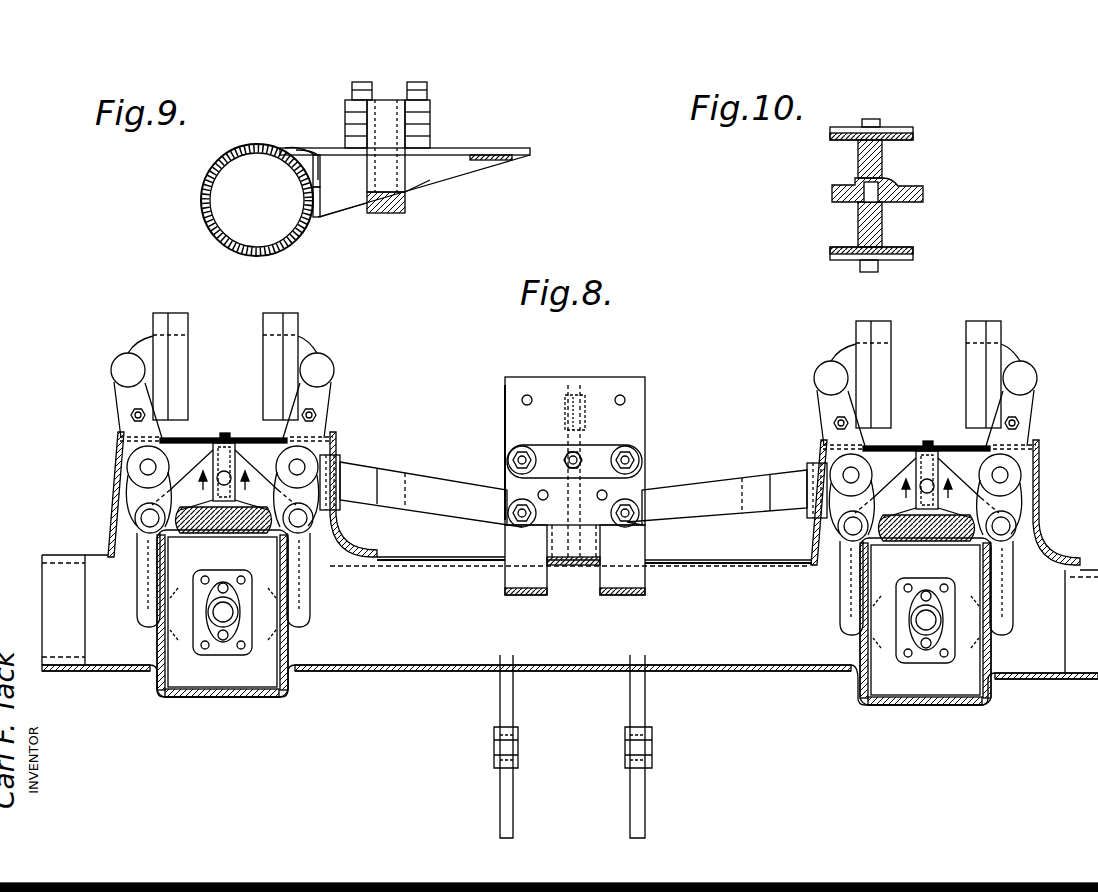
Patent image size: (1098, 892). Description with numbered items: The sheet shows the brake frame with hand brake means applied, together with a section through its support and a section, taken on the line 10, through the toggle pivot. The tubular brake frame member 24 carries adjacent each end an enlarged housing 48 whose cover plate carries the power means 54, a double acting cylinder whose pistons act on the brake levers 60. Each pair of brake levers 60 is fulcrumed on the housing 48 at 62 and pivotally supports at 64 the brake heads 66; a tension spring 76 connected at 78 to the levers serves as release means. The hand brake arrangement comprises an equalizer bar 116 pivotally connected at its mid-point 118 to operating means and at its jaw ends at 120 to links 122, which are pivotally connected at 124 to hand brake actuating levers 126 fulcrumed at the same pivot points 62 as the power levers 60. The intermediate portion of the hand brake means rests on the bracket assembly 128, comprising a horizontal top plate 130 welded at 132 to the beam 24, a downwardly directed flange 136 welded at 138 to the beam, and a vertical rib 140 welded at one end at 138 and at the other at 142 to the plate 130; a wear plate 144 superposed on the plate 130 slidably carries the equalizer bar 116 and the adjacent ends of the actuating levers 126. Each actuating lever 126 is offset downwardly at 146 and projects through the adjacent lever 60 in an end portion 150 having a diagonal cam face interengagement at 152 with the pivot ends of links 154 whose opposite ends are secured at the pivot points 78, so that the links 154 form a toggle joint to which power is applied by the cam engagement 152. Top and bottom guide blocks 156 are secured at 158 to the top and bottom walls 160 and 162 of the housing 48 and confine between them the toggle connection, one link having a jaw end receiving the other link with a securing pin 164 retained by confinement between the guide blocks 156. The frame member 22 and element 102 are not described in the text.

In FIG. 8, the direction arrows 10 is at (576, 491).
In FIG. 8, the frame tube 22 is at (398, 676).
In FIG. 9, the tubular brake frame member 24 is at (205, 190).
In FIG. 8, the tubular brake frame member 24 is at (412, 565).
In FIG. 8, the housing 48 is at (290, 690).
In FIG. 8, the power means 54 is at (200, 688).
In FIG. 8, the brake lever 60 is at (140, 550).
In FIG. 8, the fulcrum 62 is at (146, 467).
In FIG. 8, the pivot 64 is at (127, 370).
In FIG. 8, the brake head 66 is at (160, 330).
In FIG. 8, the tension spring 76 is at (222, 535).
In FIG. 8, the connection 78 is at (152, 518).
In FIG. 8, the bolt 102 is at (573, 383).
In FIG. 9, the equalizer bar 116 is at (428, 113).
In FIG. 8, the equalizer bar 116 is at (583, 455).
In FIG. 8, the pivotal connection 118 is at (578, 452).
In FIG. 9, the pivotal connection 120 is at (425, 98).
In FIG. 8, the pivotal connection 120 is at (522, 446).
In FIG. 9, the link 122 is at (430, 120).
In FIG. 8, the link 122 is at (510, 475).
In FIG. 9, the pivotal connection 124 is at (358, 95).
In FIG. 8, the pivotal connection 124 is at (508, 513).
In FIG. 9, the hand brake actuating lever 126 is at (388, 212).
In FIG. 8, the hand brake actuating lever 126 is at (415, 482).
In FIG. 9, the bracket assembly 128 is at (512, 158).
In FIG. 8, the bracket assembly 128 is at (645, 390).
In FIG. 9, the horizontal top plate 130 is at (310, 150).
In FIG. 9, the weld 132 is at (285, 148).
In FIG. 8, the weld 132 is at (520, 596).
In FIG. 9, the downwardly directed flange 136 is at (313, 170).
In FIG. 9, the weld 138 is at (312, 200).
In FIG. 8, the weld 138 is at (572, 567).
In FIG. 9, the vertical rib 140 is at (430, 185).
In FIG. 9, the weld 142 is at (495, 162).
In FIG. 9, the wear plate 144 is at (512, 150).
In FIG. 8, the wear plate 144 is at (503, 414).
In FIG. 9, the downward offset 146 is at (373, 165).
In FIG. 8, the downward offset 146 is at (385, 470).
In FIG. 8, the end portion 150 is at (248, 448).
In FIG. 8, the cam face interengagement 152 is at (220, 445).
In FIG. 10, the link 154 is at (842, 188).
In FIG. 10, the guide block 156 is at (882, 165).
In FIG. 8, the guide block 156 is at (228, 460).
In FIG. 10, the fastening 158 is at (872, 119).
In FIG. 10, the top wall 160 is at (895, 132).
In FIG. 10, the bottom wall 162 is at (905, 258).
In FIG. 10, the securing pin 164 is at (866, 198).